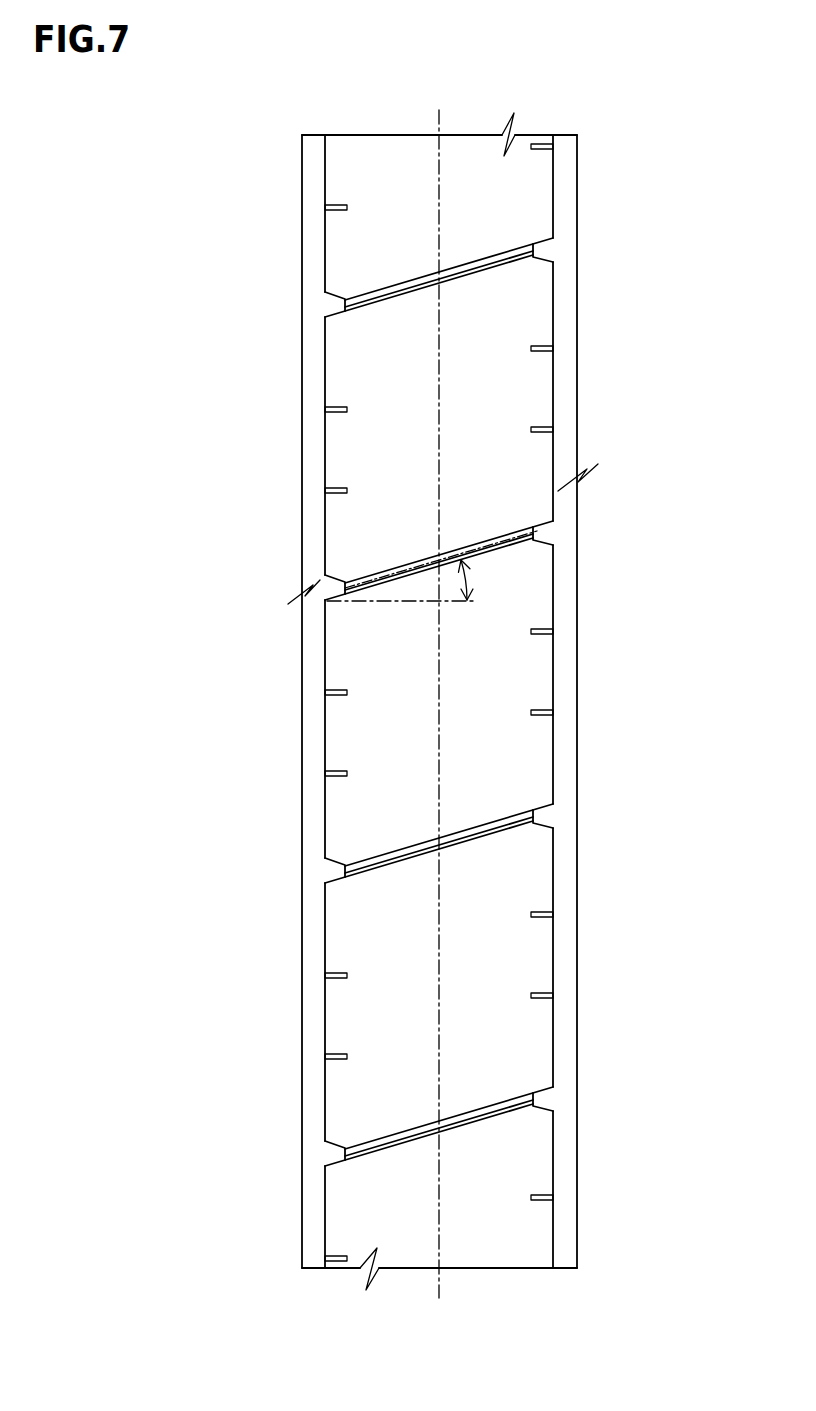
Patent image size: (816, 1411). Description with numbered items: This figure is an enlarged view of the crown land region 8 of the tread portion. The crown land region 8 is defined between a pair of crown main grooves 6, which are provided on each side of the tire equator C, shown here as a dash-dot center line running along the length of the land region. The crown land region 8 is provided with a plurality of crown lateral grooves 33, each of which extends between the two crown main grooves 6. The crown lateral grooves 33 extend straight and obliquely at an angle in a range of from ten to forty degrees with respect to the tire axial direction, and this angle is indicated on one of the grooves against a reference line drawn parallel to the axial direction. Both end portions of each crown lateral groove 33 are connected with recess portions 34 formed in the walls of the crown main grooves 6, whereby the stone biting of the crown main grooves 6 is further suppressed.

The crown main grooves 6 is at (313, 170).
The crown land region 8 is at (468, 184).
The crown lateral grooves 33 is at (420, 282).
The recess portions 34 is at (337, 306).
The tire equator C is at (438, 691).